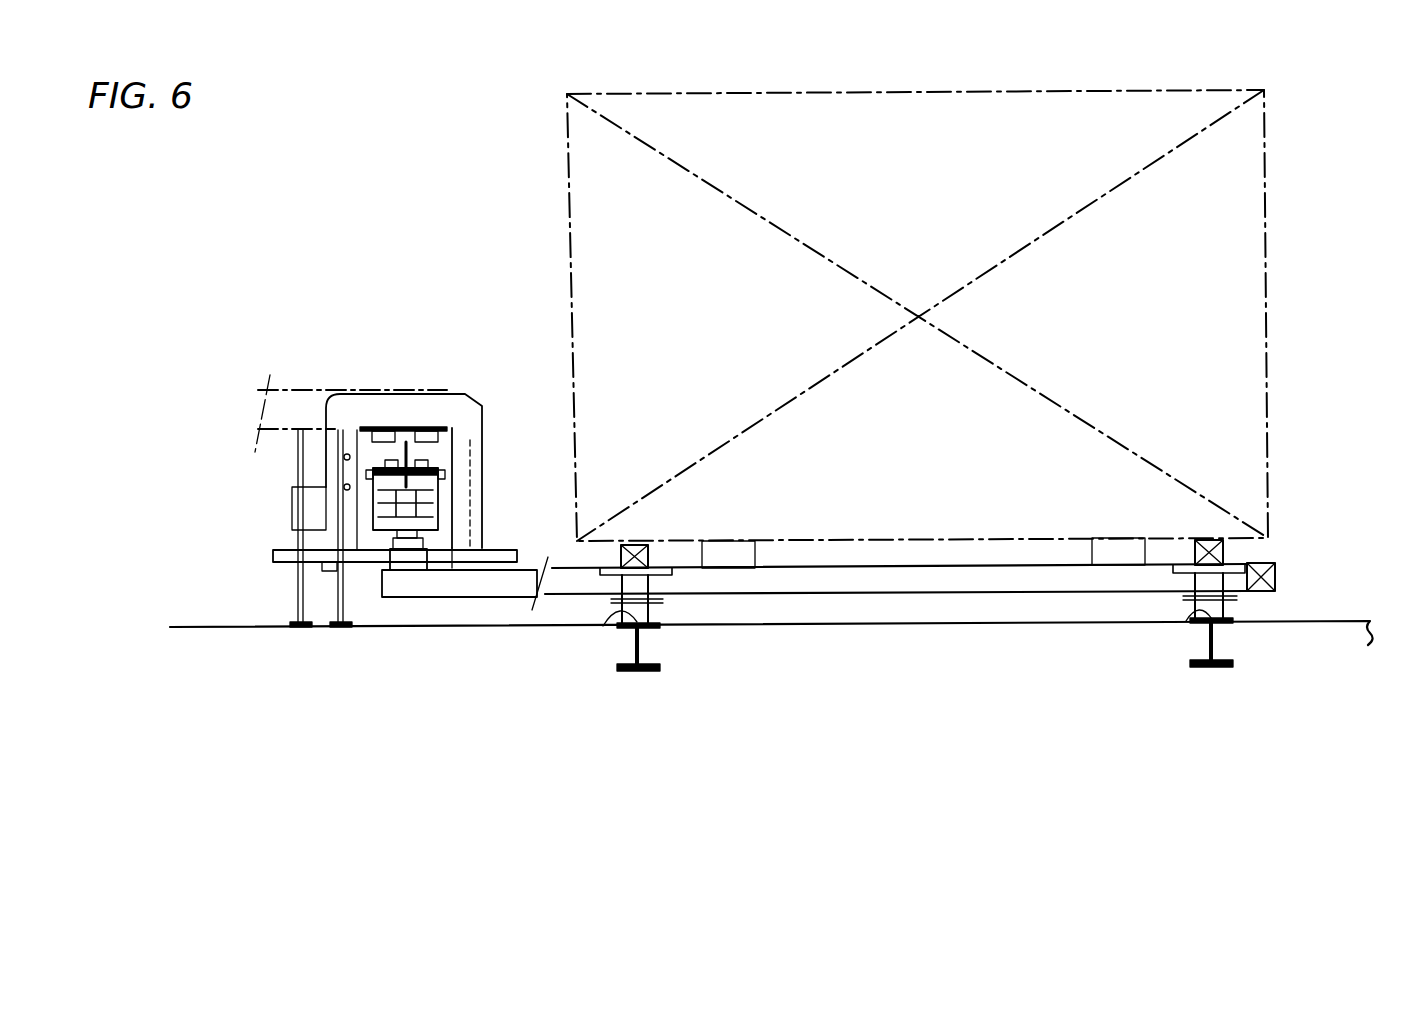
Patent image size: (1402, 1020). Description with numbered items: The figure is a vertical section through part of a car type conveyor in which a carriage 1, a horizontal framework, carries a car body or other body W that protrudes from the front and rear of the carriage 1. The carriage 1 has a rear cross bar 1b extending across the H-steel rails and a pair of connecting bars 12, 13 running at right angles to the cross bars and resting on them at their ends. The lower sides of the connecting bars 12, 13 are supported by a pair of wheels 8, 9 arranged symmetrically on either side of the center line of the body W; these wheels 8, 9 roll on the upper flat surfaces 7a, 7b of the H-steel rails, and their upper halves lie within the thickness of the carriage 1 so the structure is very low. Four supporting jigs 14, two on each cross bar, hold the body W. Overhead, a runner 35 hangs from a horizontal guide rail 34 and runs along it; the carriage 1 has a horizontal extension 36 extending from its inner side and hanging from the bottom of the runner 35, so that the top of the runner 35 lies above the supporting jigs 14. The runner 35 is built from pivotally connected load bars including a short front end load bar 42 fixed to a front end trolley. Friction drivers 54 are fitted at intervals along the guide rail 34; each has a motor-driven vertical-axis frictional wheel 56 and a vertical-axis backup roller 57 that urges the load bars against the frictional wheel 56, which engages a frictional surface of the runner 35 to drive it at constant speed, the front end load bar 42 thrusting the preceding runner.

The body W is at (566, 167).
The carriage 1 is at (978, 548).
The rear cross bar 1b is at (942, 578).
The upper flat surface 7a is at (601, 627).
The upper flat surface 7b is at (1188, 608).
The wheel 8 is at (640, 607).
The wheel 9 is at (1213, 607).
The connecting bar 12 is at (633, 543).
The connecting bar 13 is at (1210, 540).
The supporting jig 14 is at (728, 545).
The guide rail 34 is at (430, 452).
The runner 35 is at (452, 490).
The horizontal extension 36 is at (428, 580).
The front end load bar 42 is at (364, 486).
The friction driver 54 is at (276, 492).
The frictional wheel 56 is at (284, 562).
The backup roller 57 is at (458, 568).